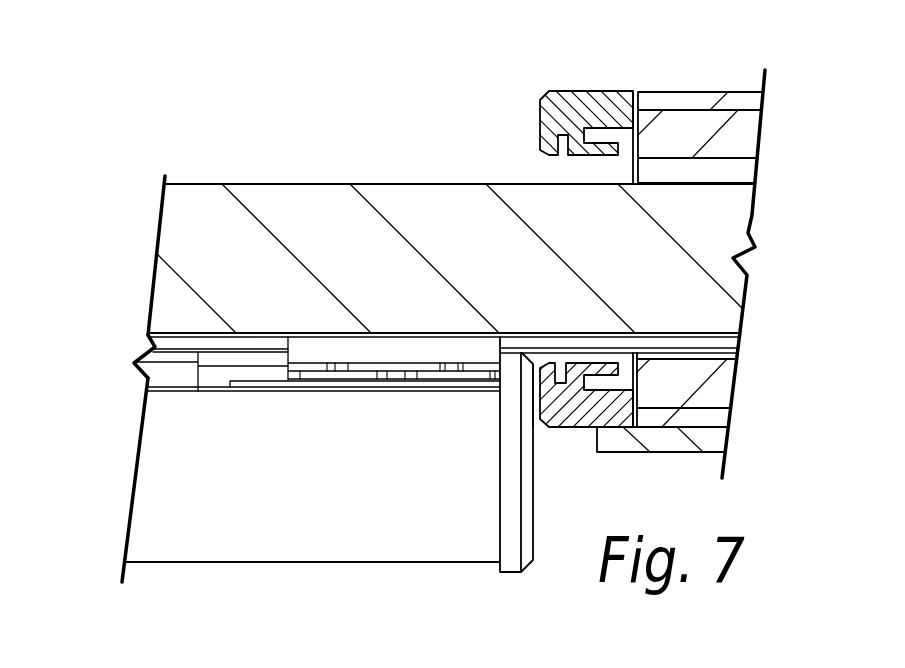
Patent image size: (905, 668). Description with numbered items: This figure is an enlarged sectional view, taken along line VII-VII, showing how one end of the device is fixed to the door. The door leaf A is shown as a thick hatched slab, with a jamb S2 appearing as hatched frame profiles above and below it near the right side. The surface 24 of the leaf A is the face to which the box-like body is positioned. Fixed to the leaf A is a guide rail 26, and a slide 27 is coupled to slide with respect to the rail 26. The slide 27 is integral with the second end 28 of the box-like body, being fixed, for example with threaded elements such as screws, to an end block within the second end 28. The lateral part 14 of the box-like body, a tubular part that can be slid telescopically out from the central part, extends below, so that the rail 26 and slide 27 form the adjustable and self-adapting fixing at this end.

The lateral part 14 is at (198, 550).
The surface of the leaf 24 is at (198, 330).
The guide rail 26 is at (267, 343).
The slide 27 is at (320, 347).
The second end of the box-like body 28 is at (423, 537).
The leaf of the door A is at (342, 210).
The jamb S2 is at (581, 108).